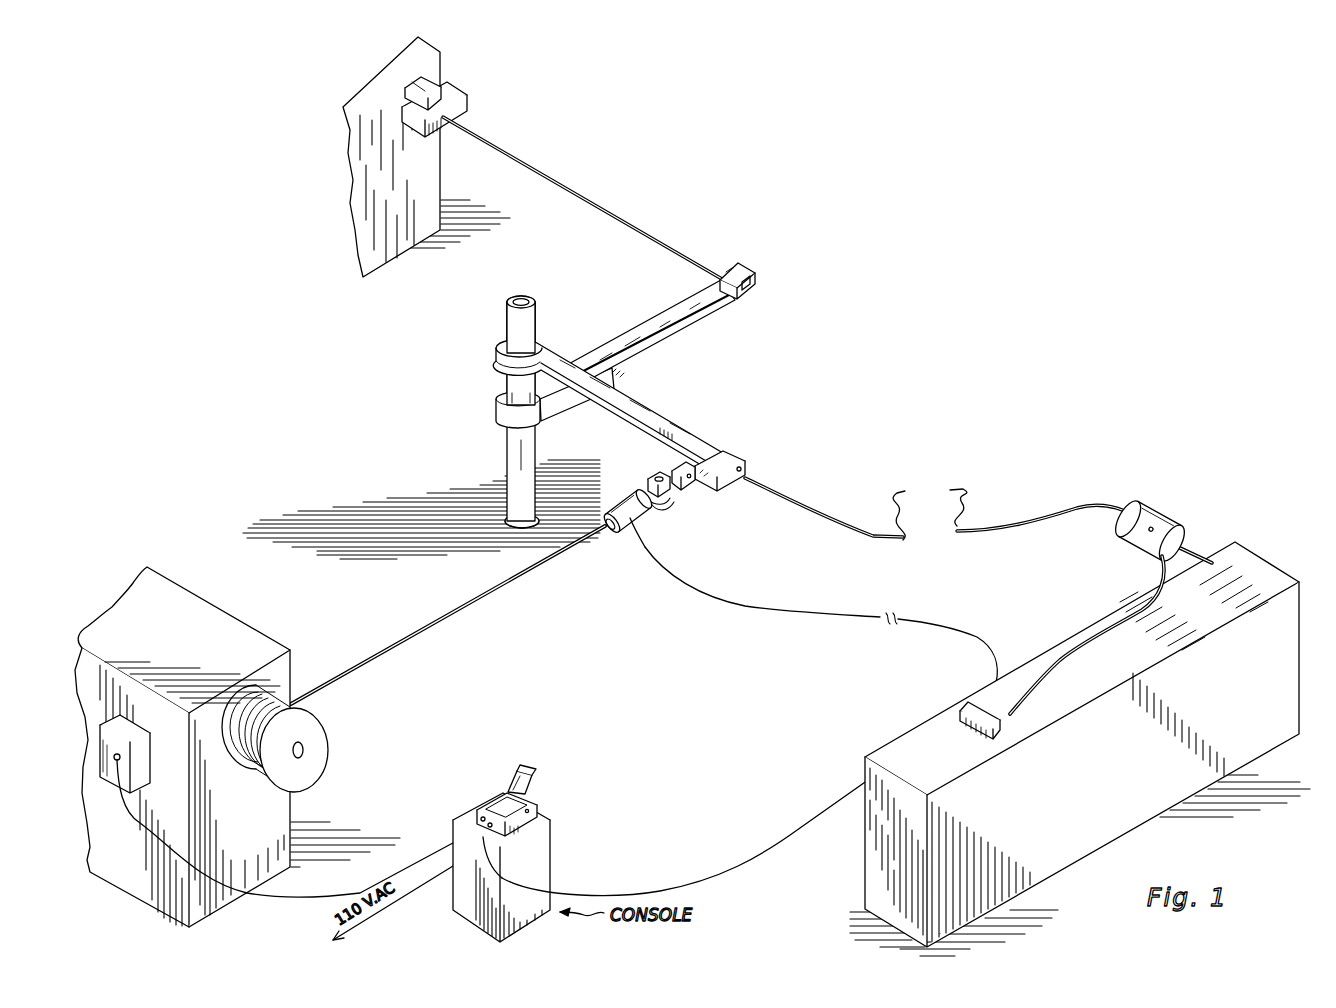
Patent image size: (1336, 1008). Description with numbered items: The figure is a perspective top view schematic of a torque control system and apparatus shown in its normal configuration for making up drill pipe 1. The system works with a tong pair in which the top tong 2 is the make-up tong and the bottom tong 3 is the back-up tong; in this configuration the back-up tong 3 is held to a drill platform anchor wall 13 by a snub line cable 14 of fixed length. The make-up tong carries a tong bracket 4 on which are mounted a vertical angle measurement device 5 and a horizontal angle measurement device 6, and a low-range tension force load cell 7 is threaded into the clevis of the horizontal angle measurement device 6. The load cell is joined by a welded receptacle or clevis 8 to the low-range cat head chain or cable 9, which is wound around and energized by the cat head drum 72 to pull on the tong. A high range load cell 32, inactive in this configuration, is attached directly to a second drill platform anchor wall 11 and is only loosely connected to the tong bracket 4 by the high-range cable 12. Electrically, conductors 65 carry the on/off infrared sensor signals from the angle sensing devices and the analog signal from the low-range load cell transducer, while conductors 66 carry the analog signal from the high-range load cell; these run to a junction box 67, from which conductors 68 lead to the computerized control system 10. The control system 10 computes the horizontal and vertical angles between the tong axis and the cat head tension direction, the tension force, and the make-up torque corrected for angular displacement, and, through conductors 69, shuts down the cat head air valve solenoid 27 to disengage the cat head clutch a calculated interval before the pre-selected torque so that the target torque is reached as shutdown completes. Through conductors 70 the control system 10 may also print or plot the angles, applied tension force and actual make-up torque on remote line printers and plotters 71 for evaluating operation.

The drill pipe 1 is at (538, 304).
The top tong 2 is at (652, 411).
The bottom tong 3 is at (698, 317).
The tong bracket 4 is at (699, 496).
The vertical angle measurement device 5 is at (675, 463).
The horizontal angle measurement device 6 is at (650, 470).
The low-range tension force load cell 7 is at (624, 494).
The clevis 8 is at (630, 530).
The cat head chain or cable 9 is at (455, 610).
The computerized control system 10 is at (518, 849).
The drill platform anchor wall 11 is at (1250, 570).
The high-range cable 12 is at (935, 509).
The drill platform anchor wall 13 is at (444, 62).
The snub line cable 14 is at (590, 206).
The solenoid 27 is at (123, 727).
The high range load cell 32 is at (1144, 506).
The conductors 65 is at (860, 613).
The conductors 66 is at (1136, 598).
The junction box 67 is at (964, 704).
The conductors 68 is at (724, 862).
The conductors 69 is at (432, 860).
The conductors 70 is at (540, 806).
The remote line printers and plotters 71 is at (538, 780).
The cat head drum 72 is at (330, 732).